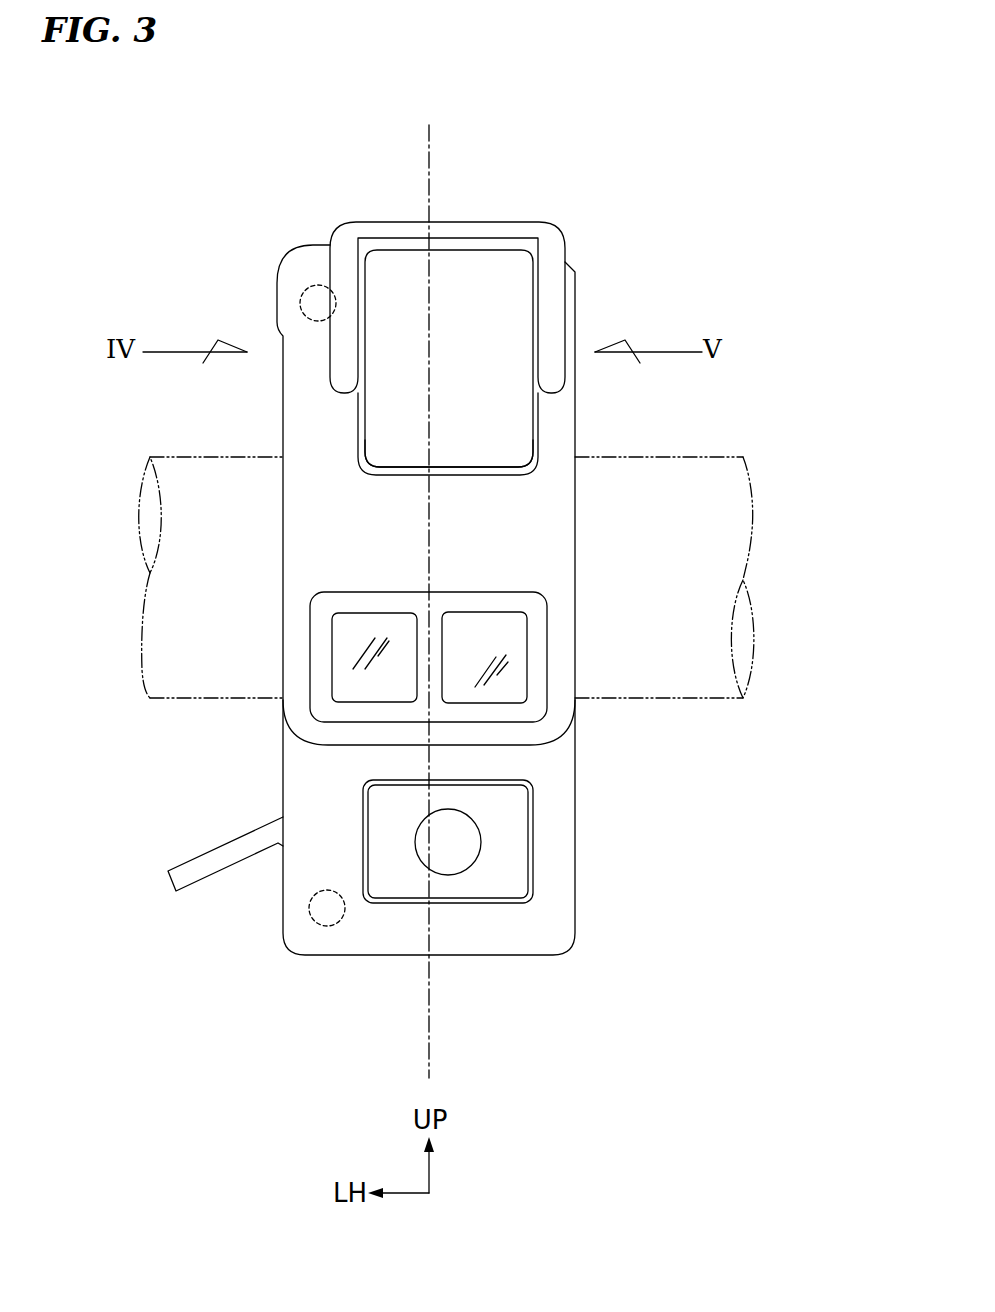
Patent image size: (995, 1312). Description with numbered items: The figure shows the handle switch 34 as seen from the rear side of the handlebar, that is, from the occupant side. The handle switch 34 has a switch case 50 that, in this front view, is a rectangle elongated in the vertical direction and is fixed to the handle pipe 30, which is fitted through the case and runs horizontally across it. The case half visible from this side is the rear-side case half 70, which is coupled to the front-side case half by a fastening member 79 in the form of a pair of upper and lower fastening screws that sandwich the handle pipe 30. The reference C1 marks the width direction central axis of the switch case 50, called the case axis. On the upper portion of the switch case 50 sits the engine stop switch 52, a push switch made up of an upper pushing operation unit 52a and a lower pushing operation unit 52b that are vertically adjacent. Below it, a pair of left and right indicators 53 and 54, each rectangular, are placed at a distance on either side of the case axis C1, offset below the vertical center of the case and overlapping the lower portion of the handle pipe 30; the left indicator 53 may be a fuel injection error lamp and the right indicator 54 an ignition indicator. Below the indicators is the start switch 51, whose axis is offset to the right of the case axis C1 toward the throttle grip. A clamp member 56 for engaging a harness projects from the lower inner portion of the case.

The handle switch 34 is at (614, 164).
The handle pipe 30 is at (712, 457).
The switch case 50 is at (529, 214).
The start switch 51 is at (512, 843).
The engine stop switch 52 is at (504, 318).
The upper pushing operation unit 52a is at (510, 278).
The lower pushing operation unit 52b is at (507, 438).
The left indicator 53 is at (342, 656).
The right indicator 54 is at (515, 687).
The clamp member 56 is at (210, 877).
The rear-side case half 70 is at (582, 931).
The fastening member 79 is at (320, 303).
The case axis C1 is at (429, 152).